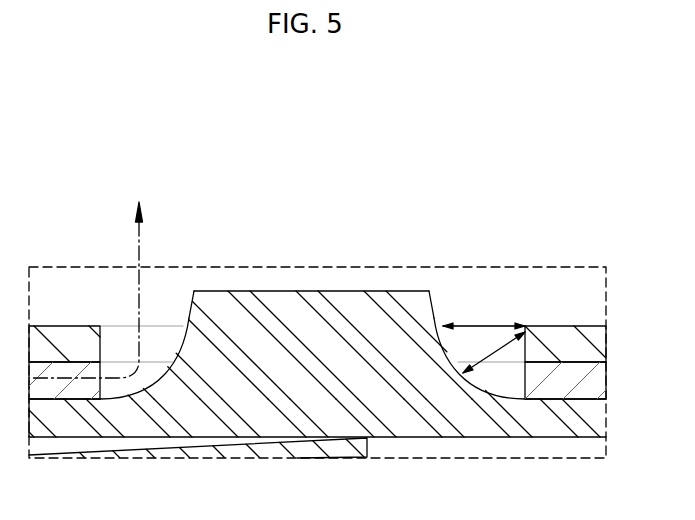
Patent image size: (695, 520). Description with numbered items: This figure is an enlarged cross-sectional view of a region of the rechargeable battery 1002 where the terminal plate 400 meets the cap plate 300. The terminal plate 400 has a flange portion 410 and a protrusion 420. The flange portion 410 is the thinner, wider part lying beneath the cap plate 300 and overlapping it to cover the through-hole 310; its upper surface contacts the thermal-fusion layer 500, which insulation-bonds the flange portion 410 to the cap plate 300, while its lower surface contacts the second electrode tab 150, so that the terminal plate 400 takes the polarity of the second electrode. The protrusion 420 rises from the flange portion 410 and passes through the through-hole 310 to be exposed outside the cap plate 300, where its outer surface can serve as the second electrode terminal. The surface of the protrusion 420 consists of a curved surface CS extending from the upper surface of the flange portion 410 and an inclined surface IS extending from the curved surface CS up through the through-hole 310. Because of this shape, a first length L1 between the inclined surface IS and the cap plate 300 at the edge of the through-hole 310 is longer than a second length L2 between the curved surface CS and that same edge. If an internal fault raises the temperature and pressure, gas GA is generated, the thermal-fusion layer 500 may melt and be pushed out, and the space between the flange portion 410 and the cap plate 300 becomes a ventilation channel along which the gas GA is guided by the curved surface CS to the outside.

The rechargeable battery 1002 is at (348, 172).
The terminal plate 400 is at (298, 285).
The flange portion 410 is at (598, 420).
The protrusion 420 is at (330, 297).
The cap plate 300 is at (598, 346).
The thermal-fusion layer 500 is at (598, 385).
The second electrode tab 150 is at (327, 450).
The through-hole 310 is at (162, 350).
The gas GA is at (139, 237).
The inclined surface IS is at (198, 303).
The curved surface CS is at (162, 382).
The first length L1 is at (460, 326).
The second length L2 is at (490, 353).